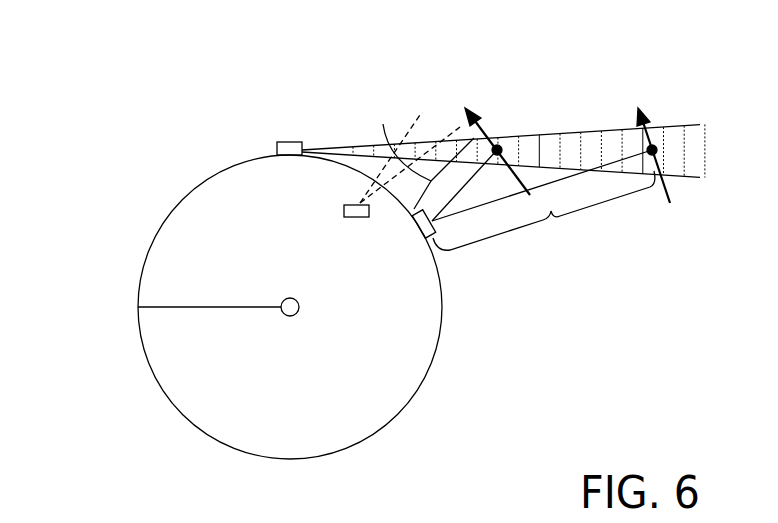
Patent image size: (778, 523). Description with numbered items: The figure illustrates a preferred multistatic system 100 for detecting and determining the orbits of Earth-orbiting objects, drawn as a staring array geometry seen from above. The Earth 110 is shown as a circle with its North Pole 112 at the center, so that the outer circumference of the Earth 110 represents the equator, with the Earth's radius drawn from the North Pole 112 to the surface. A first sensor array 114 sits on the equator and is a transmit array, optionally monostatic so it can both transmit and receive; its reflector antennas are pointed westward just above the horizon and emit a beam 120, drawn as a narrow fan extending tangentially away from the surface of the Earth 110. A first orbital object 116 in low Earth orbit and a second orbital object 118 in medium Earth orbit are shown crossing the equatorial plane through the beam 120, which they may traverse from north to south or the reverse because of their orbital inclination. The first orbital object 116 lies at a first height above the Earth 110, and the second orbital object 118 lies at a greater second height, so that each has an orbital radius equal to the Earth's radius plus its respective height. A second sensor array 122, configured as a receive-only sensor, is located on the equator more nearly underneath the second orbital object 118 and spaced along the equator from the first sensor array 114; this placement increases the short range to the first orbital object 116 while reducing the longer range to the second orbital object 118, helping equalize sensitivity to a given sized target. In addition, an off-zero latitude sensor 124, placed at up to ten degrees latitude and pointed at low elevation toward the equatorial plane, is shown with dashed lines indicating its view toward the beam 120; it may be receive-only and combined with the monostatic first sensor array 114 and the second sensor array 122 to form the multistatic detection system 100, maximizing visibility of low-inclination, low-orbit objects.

The multistatic system 100 is at (96, 138).
The Earth 110 is at (231, 252).
The North Pole 112 is at (297, 315).
The first sensor array 114 is at (290, 142).
The first orbital object 116 is at (502, 150).
The second orbital object 118 is at (658, 150).
The beam 120 is at (357, 148).
The second sensor array 122 is at (433, 230).
The sensor 124 is at (357, 218).